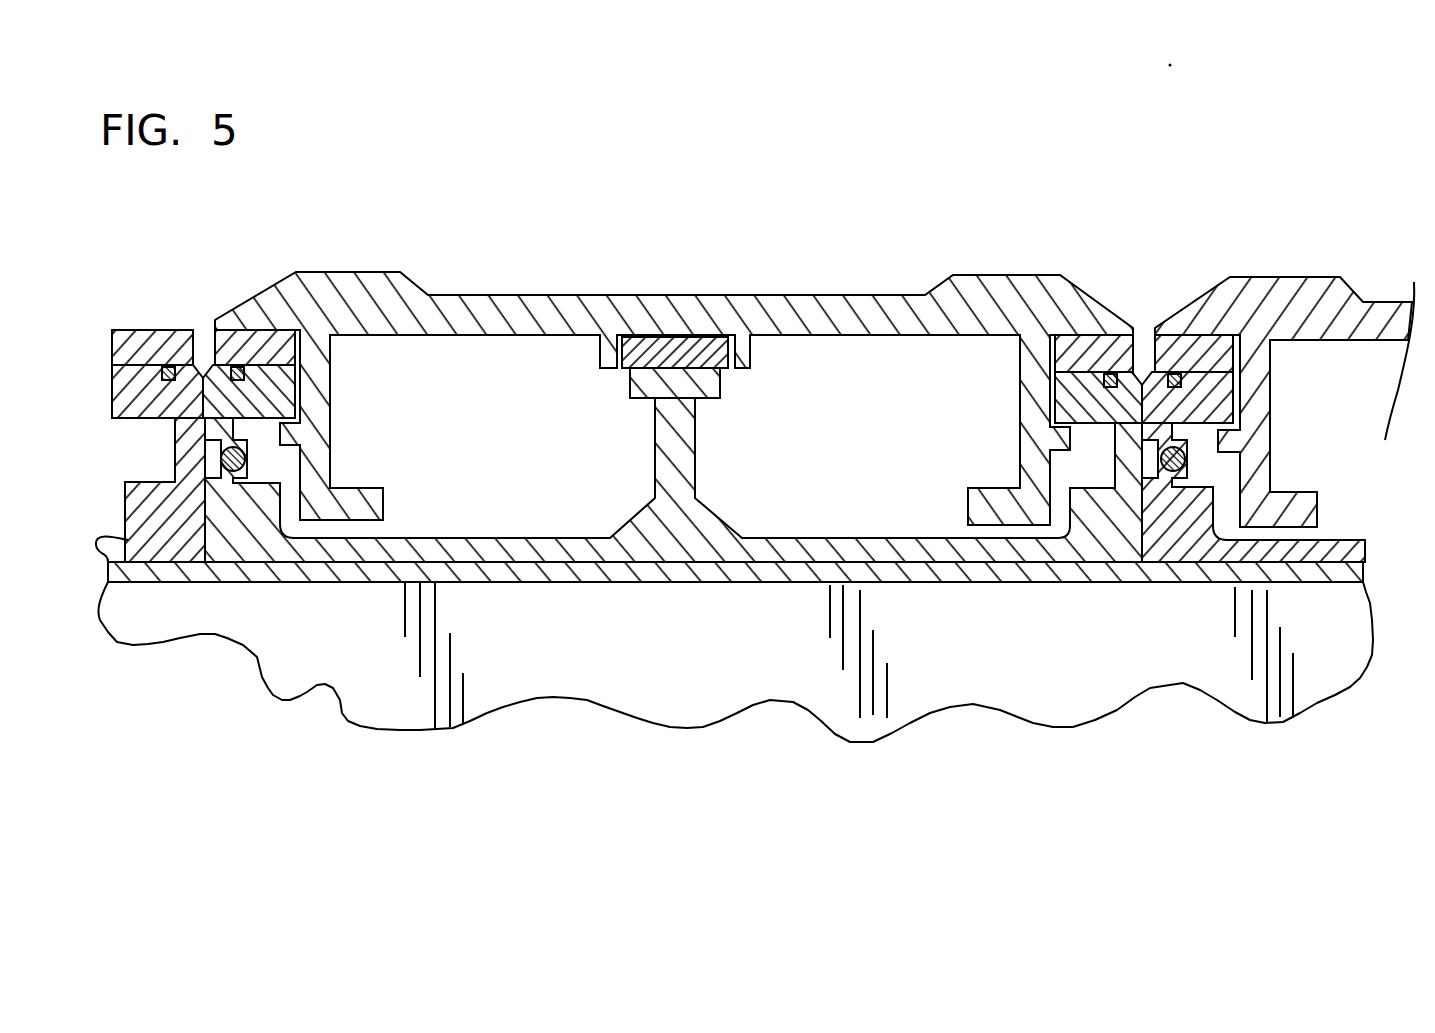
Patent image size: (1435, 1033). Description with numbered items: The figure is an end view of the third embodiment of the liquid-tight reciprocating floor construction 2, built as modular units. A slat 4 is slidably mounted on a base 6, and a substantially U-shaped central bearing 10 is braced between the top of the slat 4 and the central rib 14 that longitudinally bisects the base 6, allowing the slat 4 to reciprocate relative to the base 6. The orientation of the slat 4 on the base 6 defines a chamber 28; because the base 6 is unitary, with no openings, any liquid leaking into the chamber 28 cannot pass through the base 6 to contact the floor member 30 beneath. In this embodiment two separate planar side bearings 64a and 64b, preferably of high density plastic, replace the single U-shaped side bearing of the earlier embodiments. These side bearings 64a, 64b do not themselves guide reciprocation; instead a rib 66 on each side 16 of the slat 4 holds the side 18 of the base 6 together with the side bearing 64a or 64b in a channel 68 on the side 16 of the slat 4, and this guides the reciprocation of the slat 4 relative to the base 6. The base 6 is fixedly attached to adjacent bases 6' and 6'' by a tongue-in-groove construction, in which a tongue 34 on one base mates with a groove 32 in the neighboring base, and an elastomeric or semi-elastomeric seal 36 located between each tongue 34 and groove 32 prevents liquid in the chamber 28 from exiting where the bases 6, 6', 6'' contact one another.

The liquid-tight reciprocating floor construction 2 is at (952, 205).
The slat 4 is at (358, 272).
The base 6 is at (729, 584).
The base 6' is at (172, 522).
The base 6'' is at (1334, 600).
The central bearing 10 is at (652, 340).
The central rib 14 is at (680, 386).
The side of slat 16 is at (1023, 468).
The side of base 18 is at (1122, 503).
The chamber 28 is at (442, 360).
The floor member 30 is at (690, 717).
The groove 32 is at (1232, 455).
The tongue 34 is at (1160, 453).
The seal 36 is at (1188, 457).
The side bearing 64a is at (232, 330).
The side bearing 64b is at (133, 330).
The rib 66 is at (1060, 440).
The channel 68 is at (1052, 357).